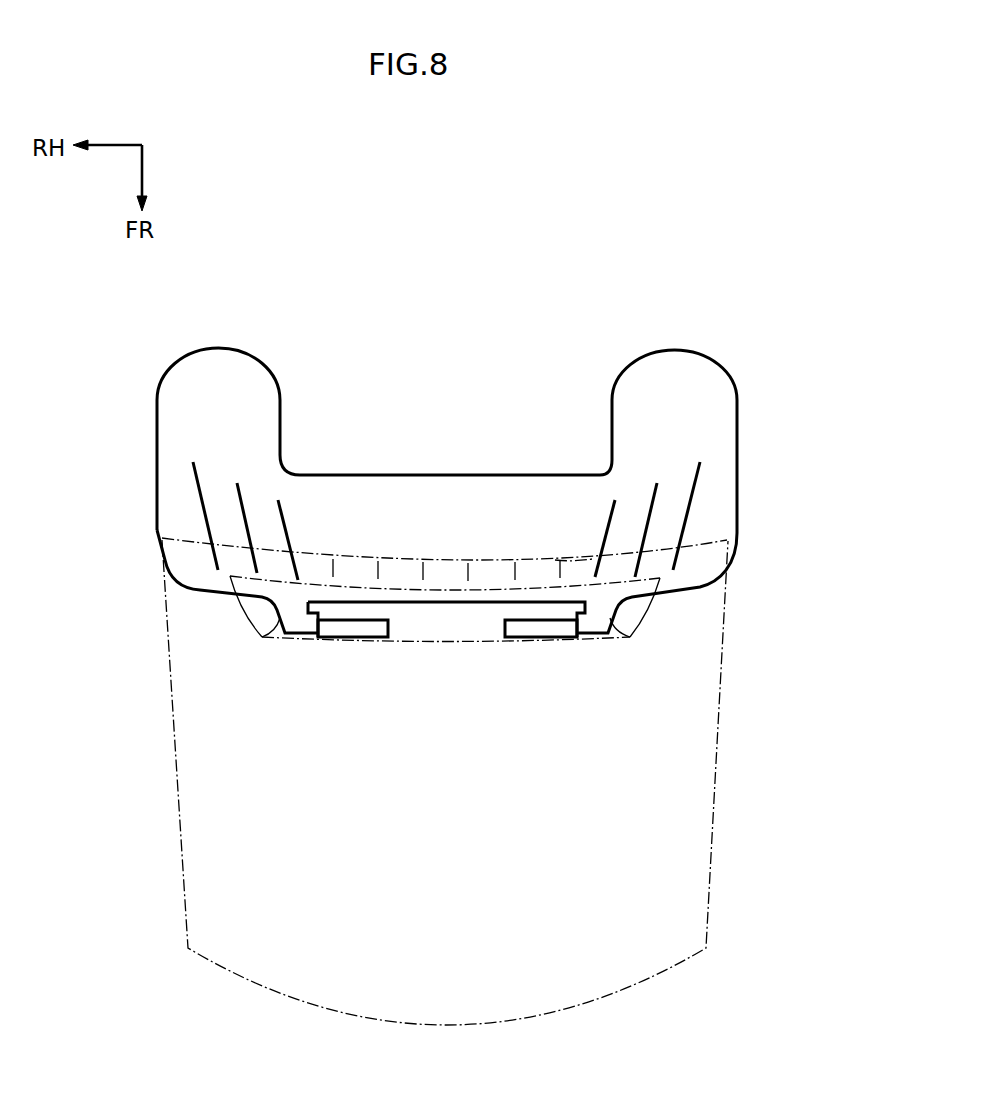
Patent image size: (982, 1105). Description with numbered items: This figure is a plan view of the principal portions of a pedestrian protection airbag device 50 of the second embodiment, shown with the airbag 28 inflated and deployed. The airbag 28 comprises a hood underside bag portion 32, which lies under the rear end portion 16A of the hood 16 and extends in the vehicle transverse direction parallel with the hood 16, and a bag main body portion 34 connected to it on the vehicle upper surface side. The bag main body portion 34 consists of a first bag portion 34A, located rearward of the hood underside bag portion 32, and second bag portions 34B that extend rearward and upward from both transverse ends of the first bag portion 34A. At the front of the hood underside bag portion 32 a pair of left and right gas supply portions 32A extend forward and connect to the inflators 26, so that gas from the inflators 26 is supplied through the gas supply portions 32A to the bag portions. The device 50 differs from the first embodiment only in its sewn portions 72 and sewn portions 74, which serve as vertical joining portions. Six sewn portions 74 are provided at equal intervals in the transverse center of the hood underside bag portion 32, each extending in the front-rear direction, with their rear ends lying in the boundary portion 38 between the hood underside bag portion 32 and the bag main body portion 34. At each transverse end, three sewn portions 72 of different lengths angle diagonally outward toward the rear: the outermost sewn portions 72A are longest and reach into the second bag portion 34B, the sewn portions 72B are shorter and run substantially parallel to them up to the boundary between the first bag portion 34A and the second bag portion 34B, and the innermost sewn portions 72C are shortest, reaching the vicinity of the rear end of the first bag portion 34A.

The hood 16 is at (177, 778).
The rear end portion of the hood 16A is at (405, 570).
The inflator 26 is at (353, 638).
The airbag 28 is at (456, 516).
The hood underside bag portion 32 is at (173, 580).
The gas supply portion 32A is at (262, 638).
The bag main body portion 34 is at (412, 422).
The first bag portion 34A is at (520, 475).
The second bag portion 34B is at (263, 362).
The boundary portion 38 is at (573, 558).
The pedestrian protection airbag device 50 is at (678, 633).
The sewn portion 72 is at (522, 470).
The sewn portion 72A is at (200, 473).
The sewn portion 72B is at (242, 500).
The sewn portion 72C is at (285, 517).
The sewn portion 74 is at (513, 567).